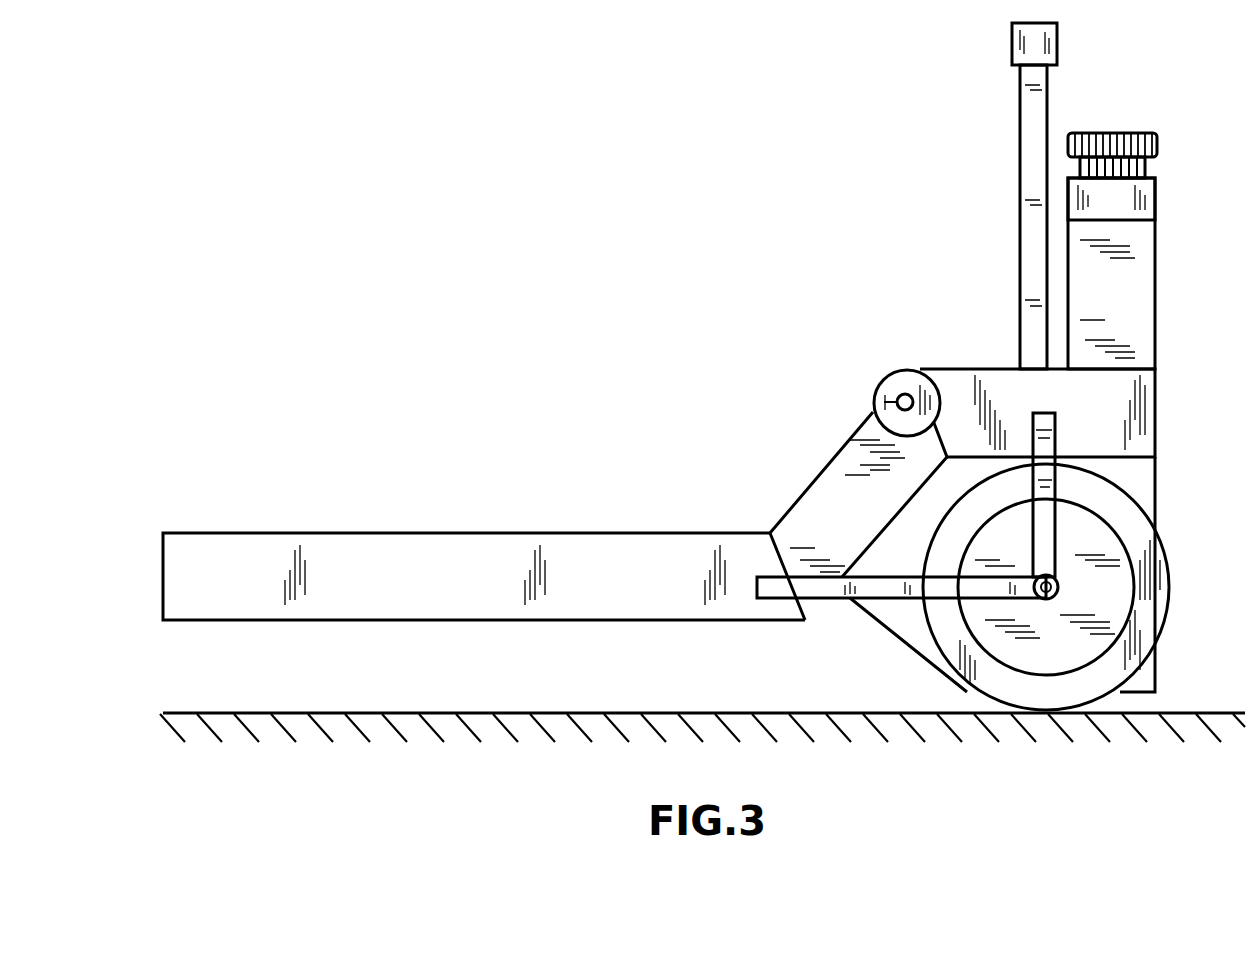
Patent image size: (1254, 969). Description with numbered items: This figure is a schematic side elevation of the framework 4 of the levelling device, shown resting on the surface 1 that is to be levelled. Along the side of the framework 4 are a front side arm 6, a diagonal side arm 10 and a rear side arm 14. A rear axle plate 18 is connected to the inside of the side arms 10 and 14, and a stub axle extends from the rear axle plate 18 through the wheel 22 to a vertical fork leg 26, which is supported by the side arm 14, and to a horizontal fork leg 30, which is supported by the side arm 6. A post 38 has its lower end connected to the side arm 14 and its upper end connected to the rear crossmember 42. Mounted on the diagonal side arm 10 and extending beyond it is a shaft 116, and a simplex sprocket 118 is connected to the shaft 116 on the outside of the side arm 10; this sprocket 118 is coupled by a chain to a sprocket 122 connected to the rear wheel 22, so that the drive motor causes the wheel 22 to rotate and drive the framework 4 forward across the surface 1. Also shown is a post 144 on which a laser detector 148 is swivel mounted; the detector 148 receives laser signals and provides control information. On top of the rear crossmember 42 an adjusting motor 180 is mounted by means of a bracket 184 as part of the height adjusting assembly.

The surface 1 is at (345, 713).
The framework 4 is at (557, 445).
The front side arm 6 is at (380, 533).
The diagonal side arm 10 is at (803, 490).
The rear side arm 14 is at (959, 369).
The rear axle plate 18 is at (1158, 478).
The wheel 22 is at (1170, 580).
The vertical fork leg 26 is at (1056, 426).
The horizontal fork leg 30 is at (853, 600).
The post 38 is at (1157, 330).
The rear crossmember 42 is at (1157, 212).
The shaft 116 is at (884, 402).
The simplex sprocket 118 is at (878, 380).
The sprocket 122 is at (1102, 648).
The post 144 is at (1020, 246).
The laser detector 148 is at (1058, 43).
The adjusting motor 180 is at (1158, 146).
The bracket 184 is at (1148, 167).